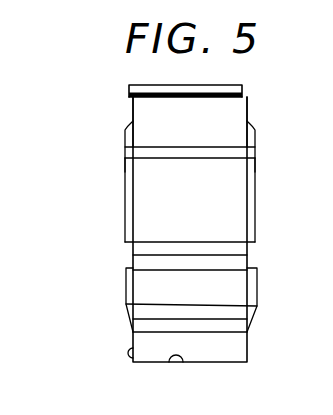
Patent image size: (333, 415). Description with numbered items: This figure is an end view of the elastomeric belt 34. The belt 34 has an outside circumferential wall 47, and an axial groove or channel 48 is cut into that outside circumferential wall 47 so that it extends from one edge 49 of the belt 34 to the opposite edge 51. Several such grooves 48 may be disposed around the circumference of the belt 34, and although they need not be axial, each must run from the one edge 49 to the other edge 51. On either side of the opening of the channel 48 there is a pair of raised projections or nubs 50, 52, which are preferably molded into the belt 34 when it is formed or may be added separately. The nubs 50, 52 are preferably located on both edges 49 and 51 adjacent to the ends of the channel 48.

The elastomeric belt 34 is at (146, 187).
The outside circumferential wall 47 is at (241, 197).
The axial groove or channel 48 is at (244, 151).
The edge of the belt 49 is at (248, 110).
The raised projection or nub 50 is at (130, 147).
The opposite edge of the belt 51 is at (134, 104).
The raised projection or nub 52 is at (128, 170).